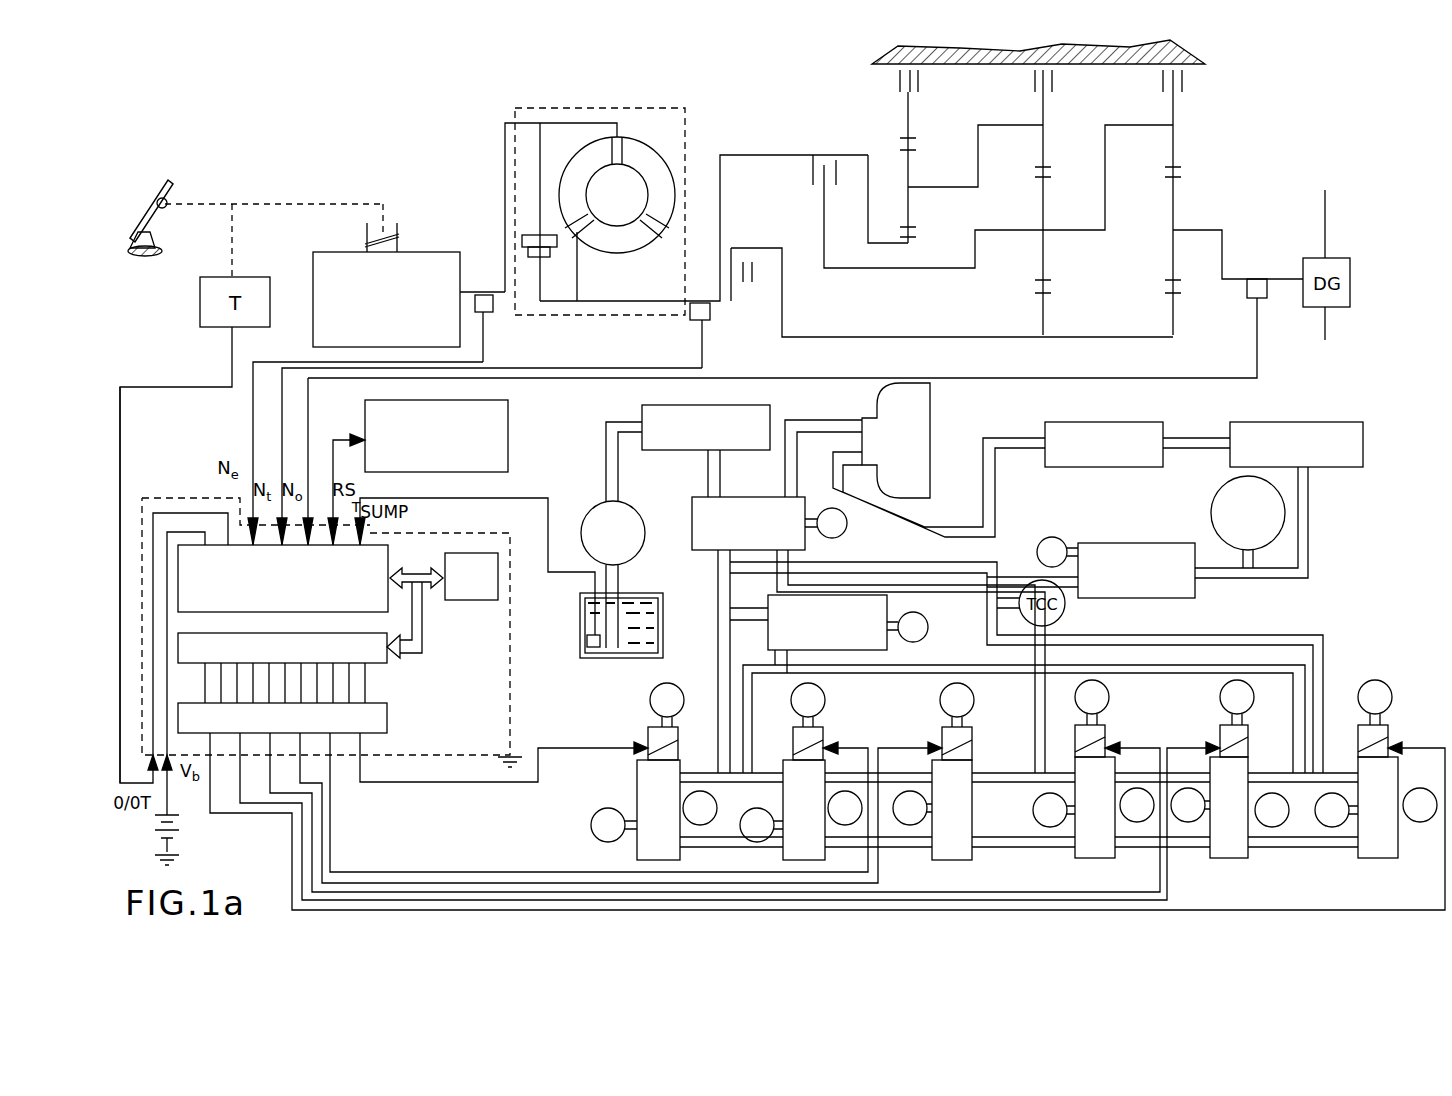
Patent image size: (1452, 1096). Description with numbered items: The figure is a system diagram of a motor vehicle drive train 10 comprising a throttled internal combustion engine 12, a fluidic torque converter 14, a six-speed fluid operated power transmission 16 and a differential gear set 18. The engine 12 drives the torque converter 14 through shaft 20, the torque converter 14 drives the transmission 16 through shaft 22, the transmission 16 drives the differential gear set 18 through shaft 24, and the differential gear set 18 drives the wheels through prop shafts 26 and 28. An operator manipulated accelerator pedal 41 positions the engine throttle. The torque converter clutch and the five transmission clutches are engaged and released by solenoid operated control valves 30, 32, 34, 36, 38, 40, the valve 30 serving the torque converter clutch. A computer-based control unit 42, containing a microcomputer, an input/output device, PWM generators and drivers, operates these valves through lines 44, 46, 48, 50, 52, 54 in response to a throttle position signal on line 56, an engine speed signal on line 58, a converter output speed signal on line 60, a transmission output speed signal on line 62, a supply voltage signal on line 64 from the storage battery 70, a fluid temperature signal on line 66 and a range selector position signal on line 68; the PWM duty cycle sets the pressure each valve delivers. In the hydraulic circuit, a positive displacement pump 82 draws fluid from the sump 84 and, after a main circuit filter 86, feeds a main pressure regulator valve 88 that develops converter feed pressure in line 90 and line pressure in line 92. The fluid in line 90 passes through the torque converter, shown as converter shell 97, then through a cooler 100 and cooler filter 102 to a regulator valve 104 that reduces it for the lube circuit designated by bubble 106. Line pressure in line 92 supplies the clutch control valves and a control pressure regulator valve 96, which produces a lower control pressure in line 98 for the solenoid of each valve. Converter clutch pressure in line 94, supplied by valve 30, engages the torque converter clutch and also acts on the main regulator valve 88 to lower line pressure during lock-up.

The motor vehicle drive train 10 is at (422, 165).
The internal combustion engine 12 is at (420, 262).
The fluidic torque converter 14 is at (530, 103).
The fluid operated power transmission 16 is at (808, 142).
The differential gear set 18 is at (1310, 295).
The shaft 20 is at (507, 276).
The shaft 22 is at (712, 318).
The shaft 24 is at (1222, 246).
The prop shaft 26 is at (1327, 211).
The prop shaft 28 is at (1327, 323).
The solenoid operated control valve 30 is at (930, 790).
The solenoid operated control valve 32 is at (647, 800).
The solenoid operated control valve 34 is at (830, 790).
The solenoid operated control valve 36 is at (1105, 833).
The solenoid operated control valve 38 is at (1228, 853).
The solenoid operated control valve 40 is at (1385, 850).
The accelerator pedal 41 is at (150, 233).
The control unit 42 is at (512, 648).
The line 44 is at (322, 797).
The line 46 is at (422, 782).
The line 48 is at (455, 870).
The line 50 is at (312, 820).
The line 52 is at (243, 762).
The line 54 is at (291, 866).
The line 56 is at (121, 507).
The line 58 is at (253, 389).
The line 60 is at (281, 446).
The line 62 is at (310, 413).
The line 64 is at (172, 787).
The line 66 is at (520, 487).
The line 68 is at (333, 470).
The storage battery 70 is at (163, 820).
The positive displacement pump 82 is at (638, 530).
The sump 84 is at (580, 650).
The main circuit filter 86 is at (665, 405).
The main pressure regulator valve 88 is at (775, 508).
The line 90 is at (815, 427).
The line 92 is at (718, 652).
The line 94 is at (860, 585).
The control pressure regulator valve 96 is at (822, 648).
The converter shell 97 is at (902, 420).
The line 98 is at (745, 712).
The cooler 100 is at (1098, 428).
The cooler filter 102 is at (1347, 438).
The regulator valve 104 is at (1185, 572).
The bubble 106 is at (1240, 490).